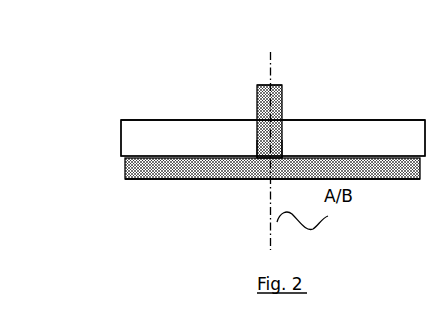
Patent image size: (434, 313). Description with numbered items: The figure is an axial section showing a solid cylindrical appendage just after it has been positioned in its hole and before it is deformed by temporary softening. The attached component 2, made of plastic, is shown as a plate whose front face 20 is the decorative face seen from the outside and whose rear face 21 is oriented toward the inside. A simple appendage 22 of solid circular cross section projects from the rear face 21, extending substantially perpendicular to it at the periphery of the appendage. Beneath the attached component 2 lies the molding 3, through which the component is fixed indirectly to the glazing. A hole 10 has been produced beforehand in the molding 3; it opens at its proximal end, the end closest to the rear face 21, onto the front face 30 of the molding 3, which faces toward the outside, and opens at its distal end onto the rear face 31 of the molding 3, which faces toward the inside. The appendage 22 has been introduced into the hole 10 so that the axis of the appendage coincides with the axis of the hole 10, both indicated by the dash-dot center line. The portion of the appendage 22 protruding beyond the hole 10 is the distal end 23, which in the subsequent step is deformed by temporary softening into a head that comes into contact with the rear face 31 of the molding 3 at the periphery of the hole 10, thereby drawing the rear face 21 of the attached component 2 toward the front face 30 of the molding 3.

The attached component 2 is at (191, 173).
The molding 3 is at (384, 135).
The hole 10 is at (262, 147).
The front face 20 is at (127, 180).
The rear face 21 is at (404, 160).
The appendage 22 is at (274, 143).
The headed distal end 23 is at (271, 96).
The front face of the molding 30 is at (172, 155).
The rear face of the molding 31 is at (184, 120).